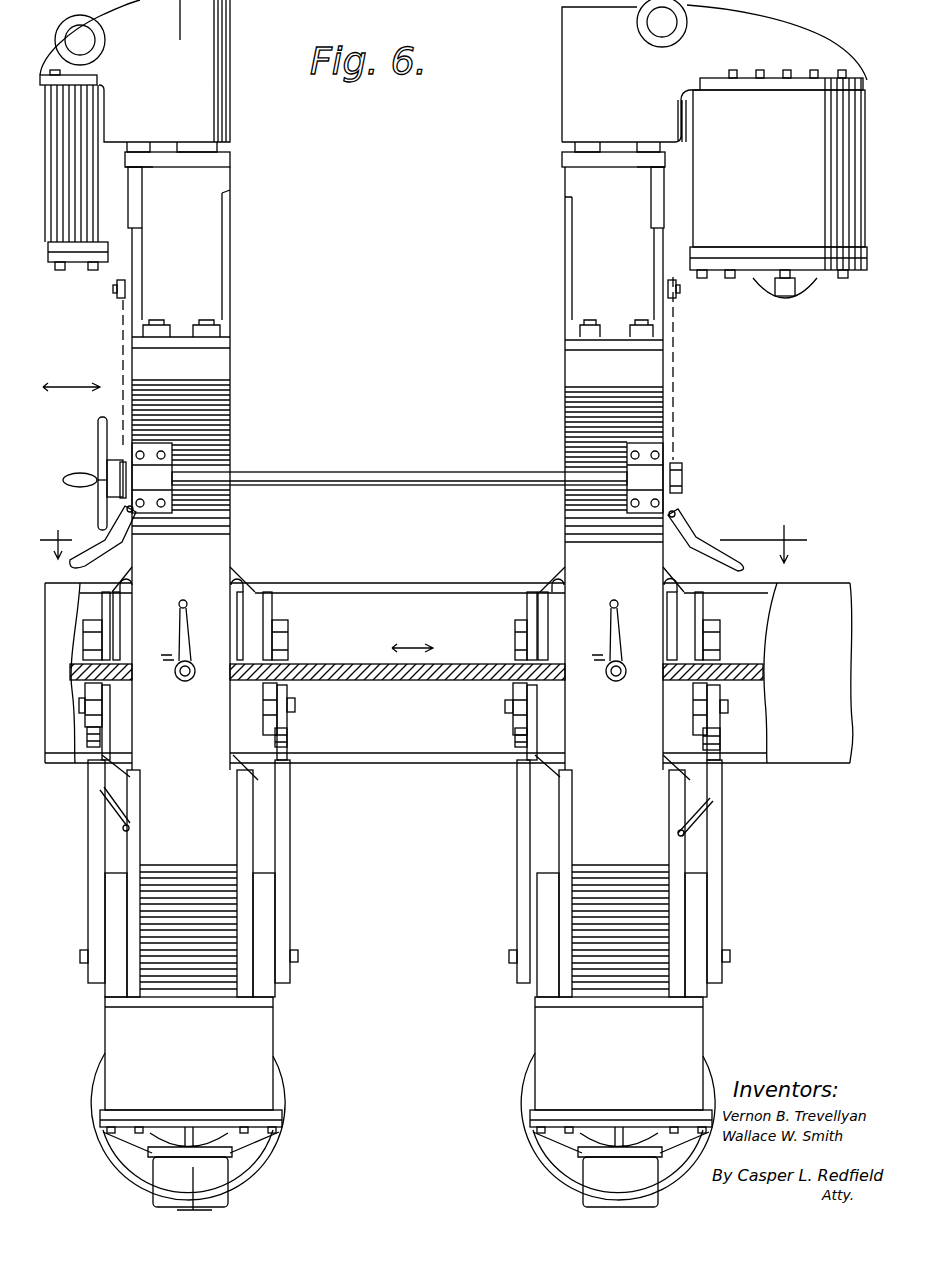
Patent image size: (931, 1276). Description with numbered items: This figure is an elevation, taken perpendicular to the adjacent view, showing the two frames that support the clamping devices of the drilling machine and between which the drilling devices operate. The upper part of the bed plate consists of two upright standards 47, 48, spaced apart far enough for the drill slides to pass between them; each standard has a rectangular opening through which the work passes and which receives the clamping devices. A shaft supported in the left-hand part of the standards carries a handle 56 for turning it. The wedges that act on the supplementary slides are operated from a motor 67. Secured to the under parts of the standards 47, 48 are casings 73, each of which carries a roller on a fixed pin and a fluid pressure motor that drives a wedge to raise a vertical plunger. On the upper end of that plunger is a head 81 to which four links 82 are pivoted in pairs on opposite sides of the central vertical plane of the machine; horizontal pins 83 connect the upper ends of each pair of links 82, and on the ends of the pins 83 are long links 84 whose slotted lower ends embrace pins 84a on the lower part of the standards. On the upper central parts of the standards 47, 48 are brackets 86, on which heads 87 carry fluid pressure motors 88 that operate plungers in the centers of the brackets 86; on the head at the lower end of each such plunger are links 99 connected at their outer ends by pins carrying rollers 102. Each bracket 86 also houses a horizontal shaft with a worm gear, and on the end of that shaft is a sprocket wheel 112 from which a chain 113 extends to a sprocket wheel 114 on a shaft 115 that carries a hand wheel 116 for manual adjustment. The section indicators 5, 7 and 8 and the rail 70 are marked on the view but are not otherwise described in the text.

The upright standard 47 is at (218, 367).
The upright standard 48 is at (567, 378).
The handle 56 is at (188, 645).
The motor 67 is at (406, 1015).
The track rail 70 is at (377, 680).
The casing 73 is at (253, 1143).
The head 81 is at (252, 770).
The link 82 is at (130, 770).
The horizontal pin 83 is at (296, 707).
The long link 84 is at (92, 855).
The pin 84a is at (298, 958).
The bracket 86 is at (231, 272).
The head 87 is at (236, 116).
The fluid pressure motor 88 is at (93, 210).
The link 99 is at (272, 610).
The roller 102 is at (288, 636).
The sprocket wheel 112 is at (115, 293).
The chain 113 is at (121, 353).
The sprocket wheel 114 is at (123, 460).
The shaft 115 is at (403, 472).
The hand wheel 116 is at (100, 456).
The section line 5 is at (71, 376).
The section line 7 and lever 7 is at (432, 538).
The section indicator 8 is at (405, 1183).